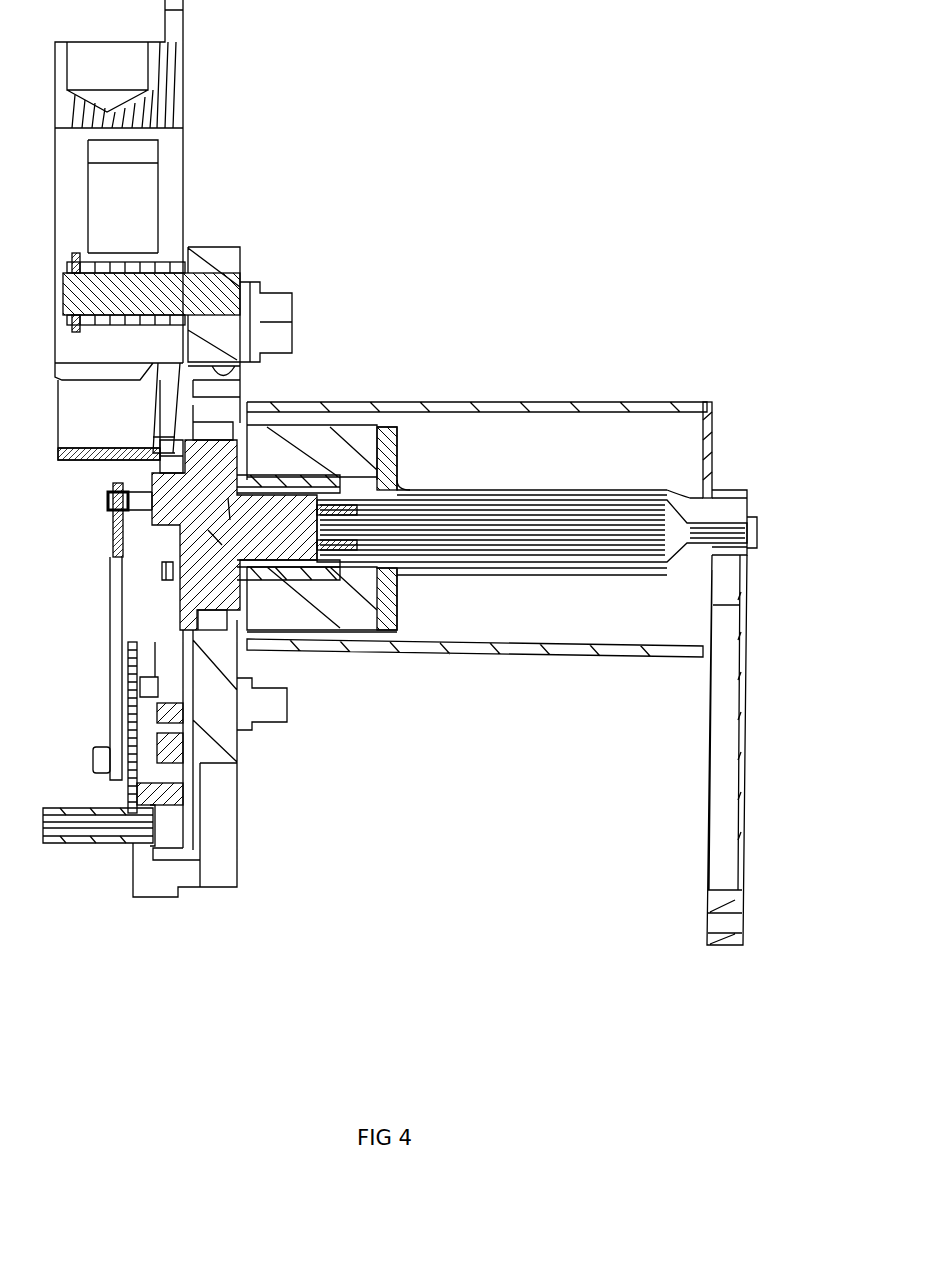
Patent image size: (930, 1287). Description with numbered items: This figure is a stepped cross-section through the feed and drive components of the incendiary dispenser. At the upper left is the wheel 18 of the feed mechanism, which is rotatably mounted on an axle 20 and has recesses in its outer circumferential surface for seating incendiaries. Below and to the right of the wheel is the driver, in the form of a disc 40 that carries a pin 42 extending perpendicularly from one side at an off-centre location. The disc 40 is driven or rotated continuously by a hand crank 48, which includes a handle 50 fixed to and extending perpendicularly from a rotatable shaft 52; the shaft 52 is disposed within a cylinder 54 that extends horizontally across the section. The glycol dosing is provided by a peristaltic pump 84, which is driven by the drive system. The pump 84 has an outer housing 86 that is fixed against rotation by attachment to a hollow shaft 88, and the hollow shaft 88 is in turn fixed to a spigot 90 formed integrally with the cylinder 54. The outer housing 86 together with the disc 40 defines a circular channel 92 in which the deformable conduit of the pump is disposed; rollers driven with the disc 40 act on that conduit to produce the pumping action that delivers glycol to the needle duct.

The wheel 18 is at (167, 160).
The axle 20 is at (243, 265).
The peristaltic pump 84 is at (236, 404).
The disc 40 is at (243, 415).
The pin 42 is at (162, 567).
The circular channel 92 is at (218, 618).
The hollow shaft 88 is at (457, 487).
The cylinder 54 is at (628, 404).
The rotatable shaft 52 is at (533, 513).
The spigot 90 is at (690, 497).
The hand crank 48 is at (744, 452).
The handle 50 is at (743, 813).
The outer housing 86 is at (223, 643).